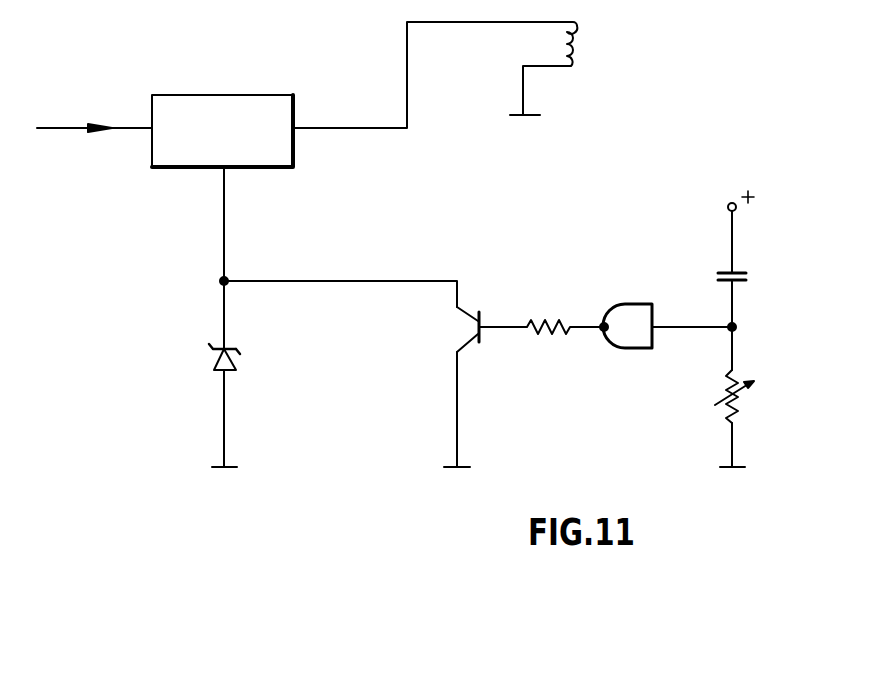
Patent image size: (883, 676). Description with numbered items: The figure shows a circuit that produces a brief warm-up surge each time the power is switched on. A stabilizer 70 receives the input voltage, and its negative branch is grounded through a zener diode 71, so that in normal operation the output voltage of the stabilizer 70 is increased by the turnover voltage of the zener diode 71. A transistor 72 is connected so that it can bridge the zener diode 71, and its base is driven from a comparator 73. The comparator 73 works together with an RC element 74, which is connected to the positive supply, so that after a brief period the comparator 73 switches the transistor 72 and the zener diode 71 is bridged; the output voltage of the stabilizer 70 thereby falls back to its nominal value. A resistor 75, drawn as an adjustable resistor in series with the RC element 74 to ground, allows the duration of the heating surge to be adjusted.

The stabilizer 70 is at (232, 102).
The zener diode 71 is at (218, 356).
The transistor 72 is at (466, 313).
The comparator 73 is at (637, 318).
The RC element 74 is at (748, 278).
The resistor 75 is at (740, 408).